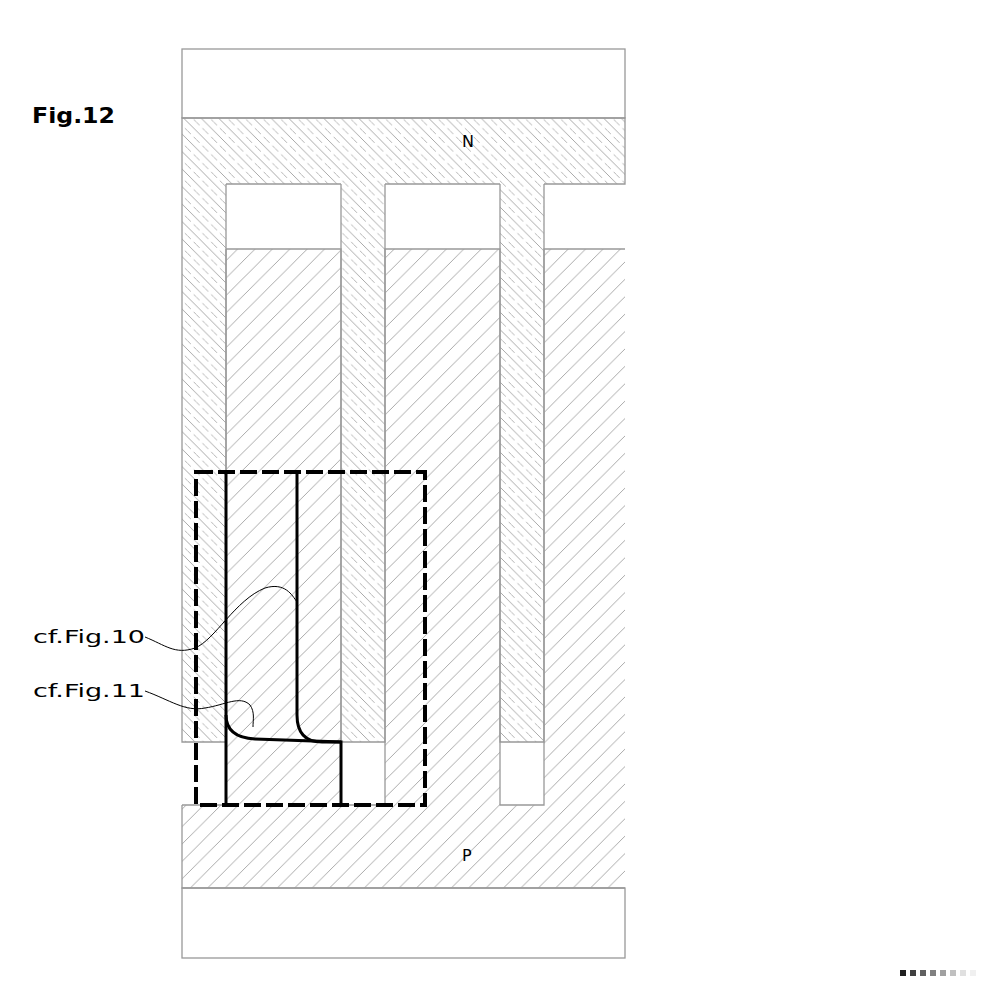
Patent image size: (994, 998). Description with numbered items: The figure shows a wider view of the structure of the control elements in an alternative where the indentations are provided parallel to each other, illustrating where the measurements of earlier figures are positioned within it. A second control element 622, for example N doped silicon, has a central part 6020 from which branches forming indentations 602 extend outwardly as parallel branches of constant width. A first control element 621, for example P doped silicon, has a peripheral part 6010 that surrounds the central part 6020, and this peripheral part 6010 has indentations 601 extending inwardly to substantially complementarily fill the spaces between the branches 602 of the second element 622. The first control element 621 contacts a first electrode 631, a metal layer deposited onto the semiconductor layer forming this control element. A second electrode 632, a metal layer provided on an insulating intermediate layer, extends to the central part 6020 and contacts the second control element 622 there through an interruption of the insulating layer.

The second electrode 632 is at (598, 82).
The second control element 622 is at (790, 86).
The central part 6020 is at (594, 153).
The indentations 602 is at (527, 408).
The first control element 621 is at (790, 667).
The indentations 601 is at (590, 604).
The peripheral part 6010 is at (557, 853).
The first electrode 631 is at (593, 923).